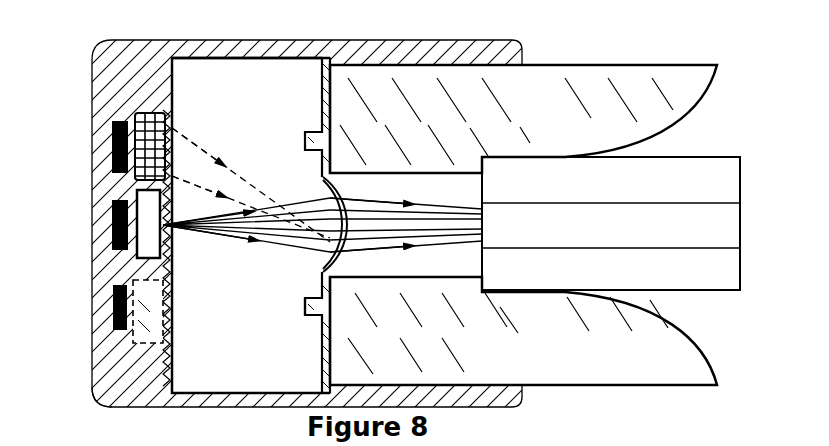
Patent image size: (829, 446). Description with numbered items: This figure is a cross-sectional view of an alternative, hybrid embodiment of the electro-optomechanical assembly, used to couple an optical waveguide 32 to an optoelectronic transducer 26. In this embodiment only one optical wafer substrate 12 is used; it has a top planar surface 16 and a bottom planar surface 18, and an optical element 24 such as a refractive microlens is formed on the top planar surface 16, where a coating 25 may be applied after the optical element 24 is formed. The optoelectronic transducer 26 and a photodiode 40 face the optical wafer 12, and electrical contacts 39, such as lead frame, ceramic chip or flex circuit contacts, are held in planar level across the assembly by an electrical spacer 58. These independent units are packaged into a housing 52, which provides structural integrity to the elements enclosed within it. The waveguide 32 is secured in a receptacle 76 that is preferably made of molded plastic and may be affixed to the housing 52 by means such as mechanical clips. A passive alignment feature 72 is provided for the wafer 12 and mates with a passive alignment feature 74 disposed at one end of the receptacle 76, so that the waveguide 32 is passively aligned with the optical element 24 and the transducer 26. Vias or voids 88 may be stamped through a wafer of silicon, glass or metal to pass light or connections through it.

The optical wafer substrate 12 is at (273, 123).
The top planar surface 16 is at (327, 58).
The bottom planar surface 18 is at (168, 58).
The optical element 24 is at (337, 190).
The coating 25 is at (323, 192).
The optoelectronic transducer 26 is at (148, 202).
The optical waveguide 32 is at (708, 155).
The contacts 39 is at (110, 133).
The photodiode 40 is at (133, 115).
The housing 52 is at (100, 398).
The electrical spacer 58 is at (153, 330).
The passive alignment feature 72 is at (305, 313).
The passive alignment feature 74 is at (330, 312).
The receptacle 76 is at (640, 80).
The vias or voids 88 is at (425, 195).